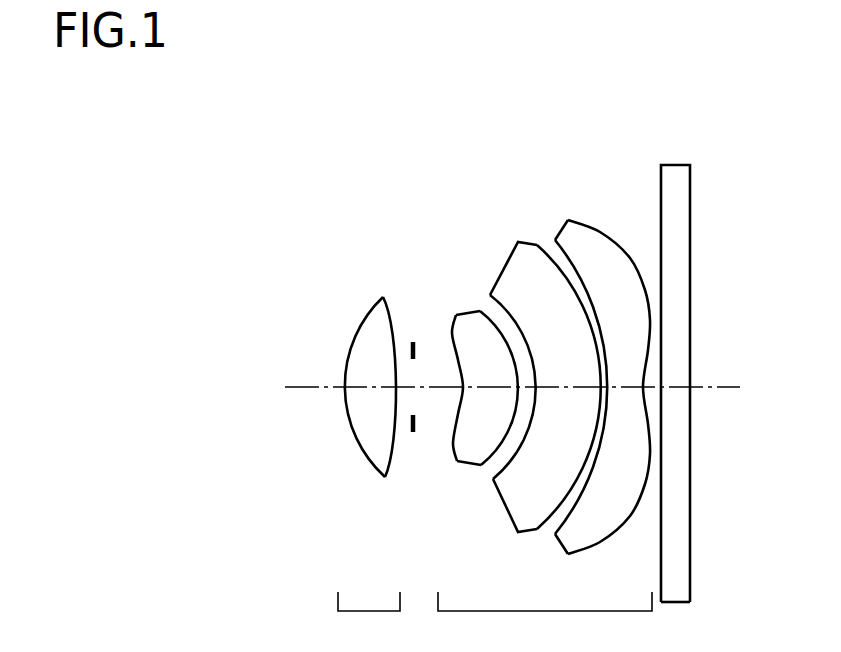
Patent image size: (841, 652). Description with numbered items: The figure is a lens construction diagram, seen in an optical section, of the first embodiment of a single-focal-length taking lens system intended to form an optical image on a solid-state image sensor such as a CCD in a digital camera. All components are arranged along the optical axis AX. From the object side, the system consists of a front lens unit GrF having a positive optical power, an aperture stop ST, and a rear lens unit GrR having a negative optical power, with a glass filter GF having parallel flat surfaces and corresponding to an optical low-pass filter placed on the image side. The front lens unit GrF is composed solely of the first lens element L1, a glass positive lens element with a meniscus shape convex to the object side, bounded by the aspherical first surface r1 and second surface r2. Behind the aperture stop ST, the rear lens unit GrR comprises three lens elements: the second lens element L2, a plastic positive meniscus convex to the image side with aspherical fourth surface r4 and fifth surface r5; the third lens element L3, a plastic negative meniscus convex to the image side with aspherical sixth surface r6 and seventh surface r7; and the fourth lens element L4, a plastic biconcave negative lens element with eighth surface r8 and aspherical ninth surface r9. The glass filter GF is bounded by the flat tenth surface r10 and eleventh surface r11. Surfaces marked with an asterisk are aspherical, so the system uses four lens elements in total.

The optical axis AX is at (706, 389).
The first lens element L1 is at (361, 387).
The second lens element L2 is at (475, 372).
The third lens element L3 is at (534, 356).
The fourth lens element L4 is at (578, 368).
The aperture stop ST is at (414, 341).
The glass filter GF is at (699, 345).
The front lens unit GrF is at (369, 620).
The rear lens unit GrR is at (545, 620).
The first surface r1 is at (362, 306).
The second surface r2 is at (397, 324).
The fourth surface r4 is at (455, 314).
The fifth surface r5 is at (478, 313).
The sixth surface r6 is at (497, 293).
The seventh surface r7 is at (519, 242).
The eighth surface r8 is at (566, 219).
The ninth surface r9 is at (592, 219).
The tenth surface r10 is at (659, 188).
The eleventh surface r11 is at (692, 180).